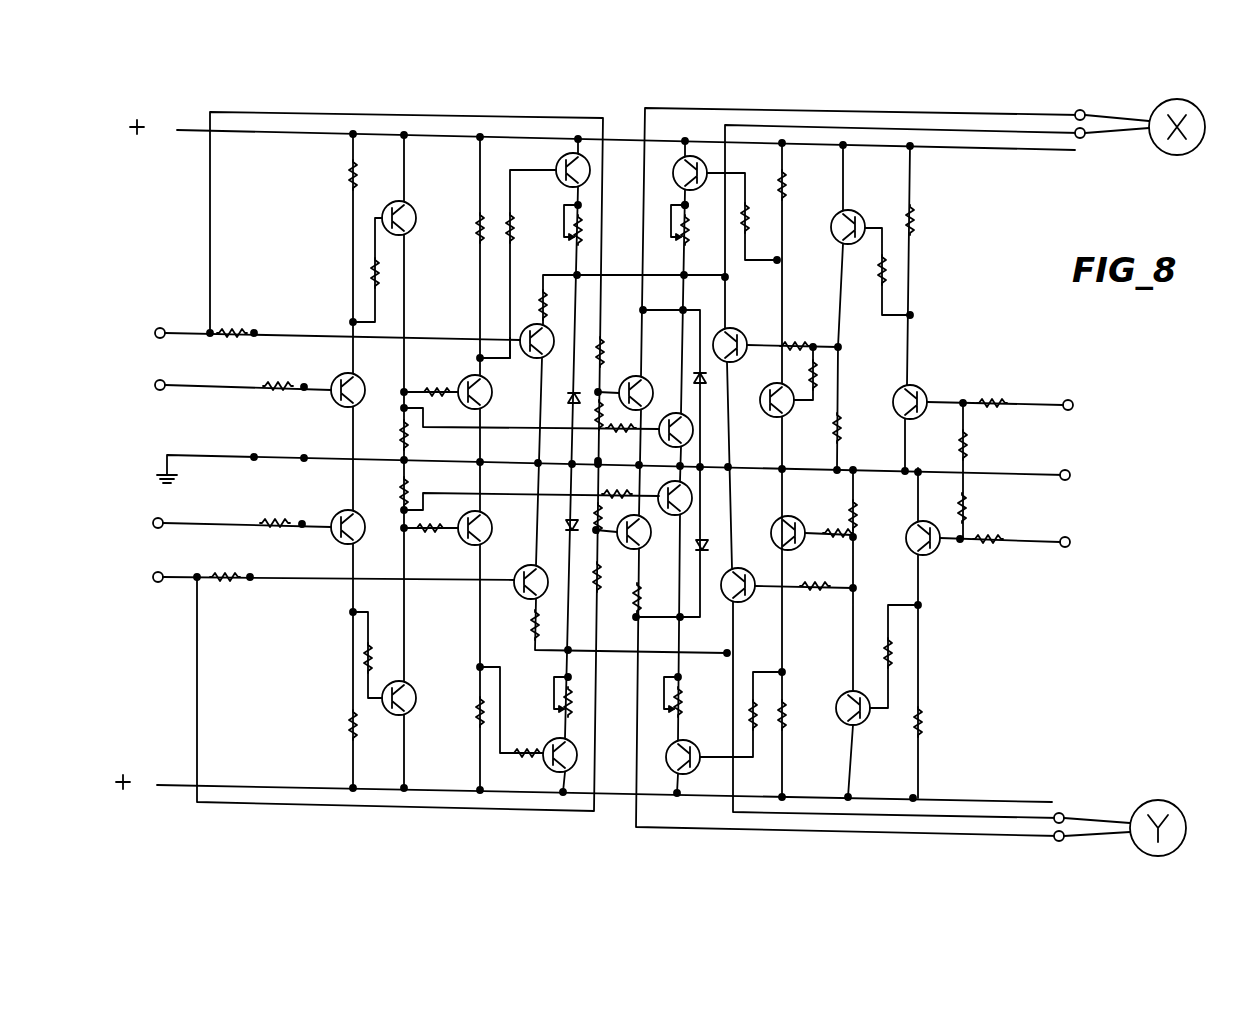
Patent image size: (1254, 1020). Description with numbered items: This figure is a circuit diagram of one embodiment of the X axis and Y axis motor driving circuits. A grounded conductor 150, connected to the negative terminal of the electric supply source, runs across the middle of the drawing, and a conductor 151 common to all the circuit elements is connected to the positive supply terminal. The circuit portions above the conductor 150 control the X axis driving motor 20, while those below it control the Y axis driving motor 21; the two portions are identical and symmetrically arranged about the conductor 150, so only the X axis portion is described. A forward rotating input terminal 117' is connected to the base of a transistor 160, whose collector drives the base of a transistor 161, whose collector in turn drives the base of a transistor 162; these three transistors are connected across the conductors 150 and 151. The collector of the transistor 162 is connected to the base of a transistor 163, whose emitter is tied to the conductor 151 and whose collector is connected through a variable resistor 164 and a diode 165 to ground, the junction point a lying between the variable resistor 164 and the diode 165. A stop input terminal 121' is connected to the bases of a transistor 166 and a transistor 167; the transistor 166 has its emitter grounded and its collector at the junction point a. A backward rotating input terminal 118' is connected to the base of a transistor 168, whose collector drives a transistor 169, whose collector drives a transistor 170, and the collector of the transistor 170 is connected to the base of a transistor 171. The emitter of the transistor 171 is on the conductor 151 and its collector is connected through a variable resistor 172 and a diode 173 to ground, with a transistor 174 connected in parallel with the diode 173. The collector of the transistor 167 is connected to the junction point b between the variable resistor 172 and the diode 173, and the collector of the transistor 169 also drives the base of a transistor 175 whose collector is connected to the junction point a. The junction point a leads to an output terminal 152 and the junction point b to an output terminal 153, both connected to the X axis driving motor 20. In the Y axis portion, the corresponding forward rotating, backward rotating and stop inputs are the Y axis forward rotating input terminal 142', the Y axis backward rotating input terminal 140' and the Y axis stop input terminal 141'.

The conductor 151 is at (194, 112).
The stop input terminal 121' is at (334, 314).
The forward rotating input terminal 117' is at (243, 368).
The conductor 150 is at (211, 455).
The Y axis forward rotating input terminal 142' is at (211, 493).
The Y axis stop input terminal 141' is at (333, 556).
The transistor 160 is at (332, 376).
The transistor 161 is at (414, 206).
The transistor 162 is at (487, 396).
The transistor 163 is at (583, 153).
The variable resistor 164 is at (566, 212).
The diode 165 is at (568, 408).
The transistor 166 is at (522, 332).
The transistor 167 is at (604, 378).
The transistor 171 is at (704, 158).
The variable resistor 172 is at (678, 238).
The transistor 174 is at (694, 434).
The transistor 175 is at (738, 331).
The diode 173 is at (762, 348).
The transistor 170 is at (784, 418).
The transistor 169 is at (838, 212).
The transistor 168 is at (918, 388).
The backward rotating input terminal 118' is at (1023, 384).
The Y axis backward rotating input terminal 140' is at (1017, 567).
The output terminal 153 is at (1092, 100).
The output terminal 152 is at (1084, 138).
The X axis driving motor 20 is at (1188, 146).
The Y axis driving motor 21 is at (1150, 800).